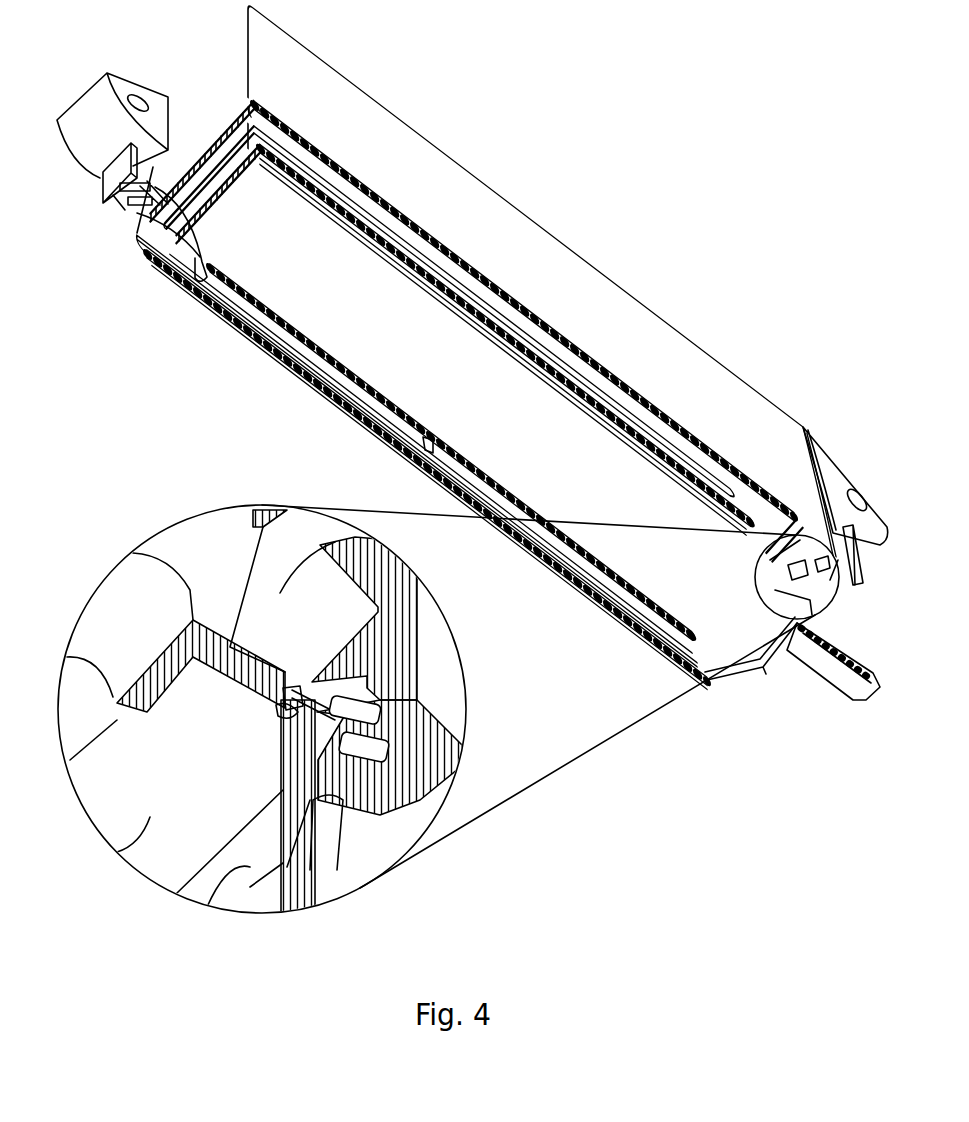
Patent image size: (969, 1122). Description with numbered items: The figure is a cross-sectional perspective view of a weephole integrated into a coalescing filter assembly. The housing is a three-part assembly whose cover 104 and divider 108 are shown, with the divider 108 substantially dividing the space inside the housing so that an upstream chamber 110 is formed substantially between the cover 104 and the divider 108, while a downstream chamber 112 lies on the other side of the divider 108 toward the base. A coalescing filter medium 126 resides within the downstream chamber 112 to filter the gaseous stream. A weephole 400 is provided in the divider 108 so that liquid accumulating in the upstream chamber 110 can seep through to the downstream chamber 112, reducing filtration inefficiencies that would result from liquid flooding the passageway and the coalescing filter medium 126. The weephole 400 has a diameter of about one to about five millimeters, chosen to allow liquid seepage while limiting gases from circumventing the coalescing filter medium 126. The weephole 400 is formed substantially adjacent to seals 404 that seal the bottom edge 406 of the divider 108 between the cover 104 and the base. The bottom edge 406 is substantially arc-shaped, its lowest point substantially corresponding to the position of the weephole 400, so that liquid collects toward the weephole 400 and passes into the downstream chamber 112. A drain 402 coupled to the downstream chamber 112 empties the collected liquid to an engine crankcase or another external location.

The cover 104 is at (593, 360).
The divider 108 is at (640, 437).
The upstream chamber 110 is at (523, 328).
The downstream chamber 112 is at (755, 657).
The coalescing filter medium 126 is at (415, 390).
The weephole 400 is at (827, 548).
The drain 402 is at (852, 678).
The seals 404 is at (332, 748).
The bottom edge 406 is at (282, 712).